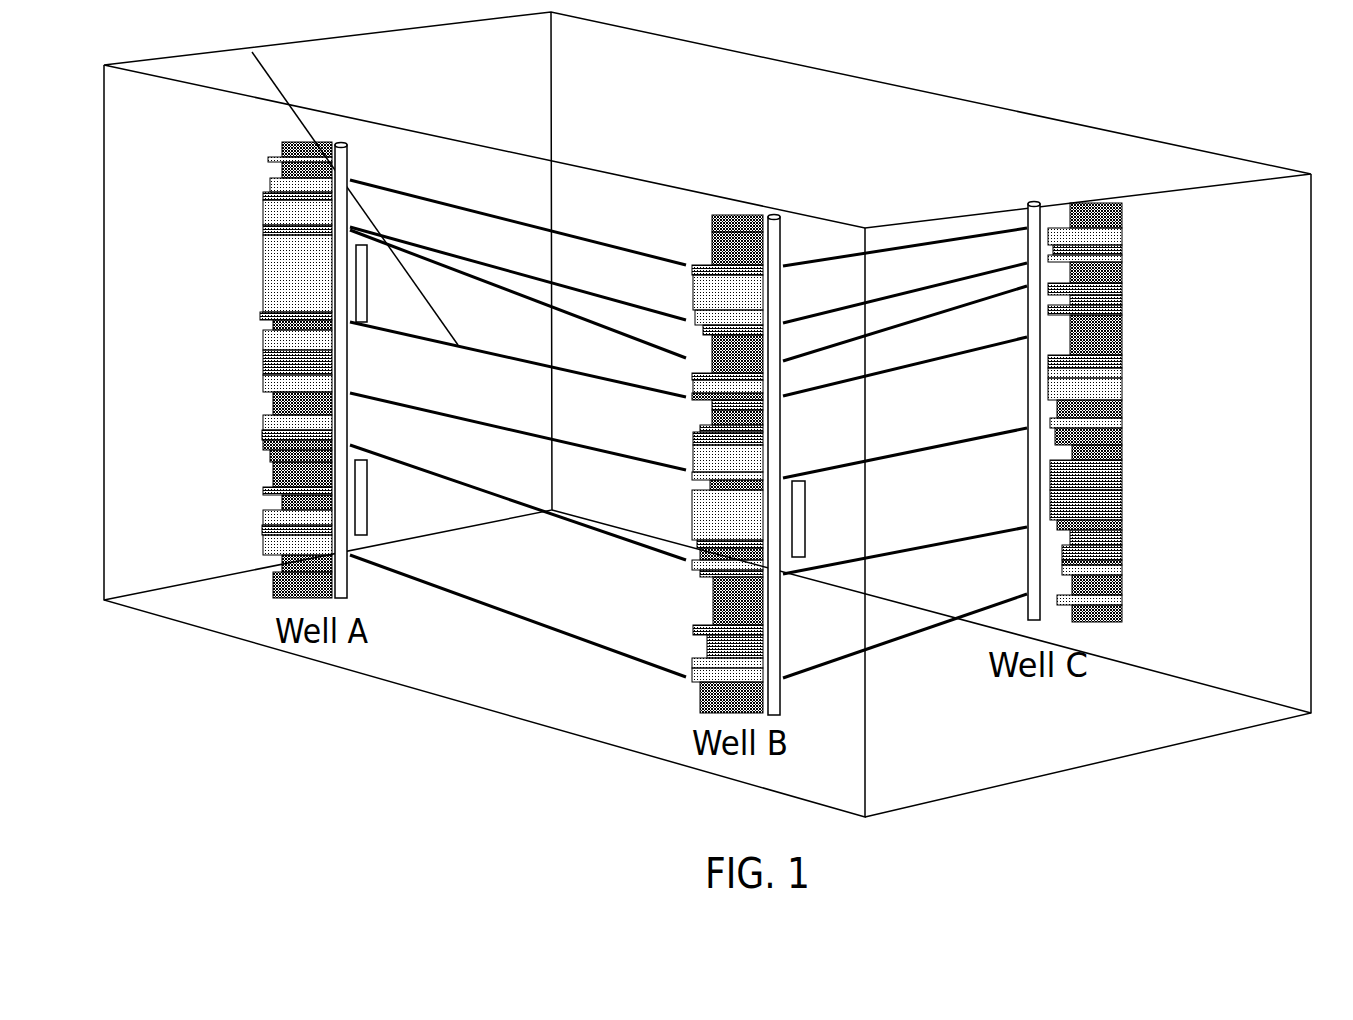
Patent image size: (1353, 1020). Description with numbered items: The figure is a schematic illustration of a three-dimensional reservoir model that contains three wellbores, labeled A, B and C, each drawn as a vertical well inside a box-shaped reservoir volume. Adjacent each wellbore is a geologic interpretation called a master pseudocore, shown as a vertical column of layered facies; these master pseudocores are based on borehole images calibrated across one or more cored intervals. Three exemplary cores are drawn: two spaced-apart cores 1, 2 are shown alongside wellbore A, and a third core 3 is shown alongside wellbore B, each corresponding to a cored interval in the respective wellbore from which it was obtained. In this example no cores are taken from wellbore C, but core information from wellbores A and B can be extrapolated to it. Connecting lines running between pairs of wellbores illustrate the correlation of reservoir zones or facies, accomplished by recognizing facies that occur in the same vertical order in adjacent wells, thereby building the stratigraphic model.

The core 1 is at (414, 283).
The core 2 is at (415, 497).
The core 3 is at (851, 519).